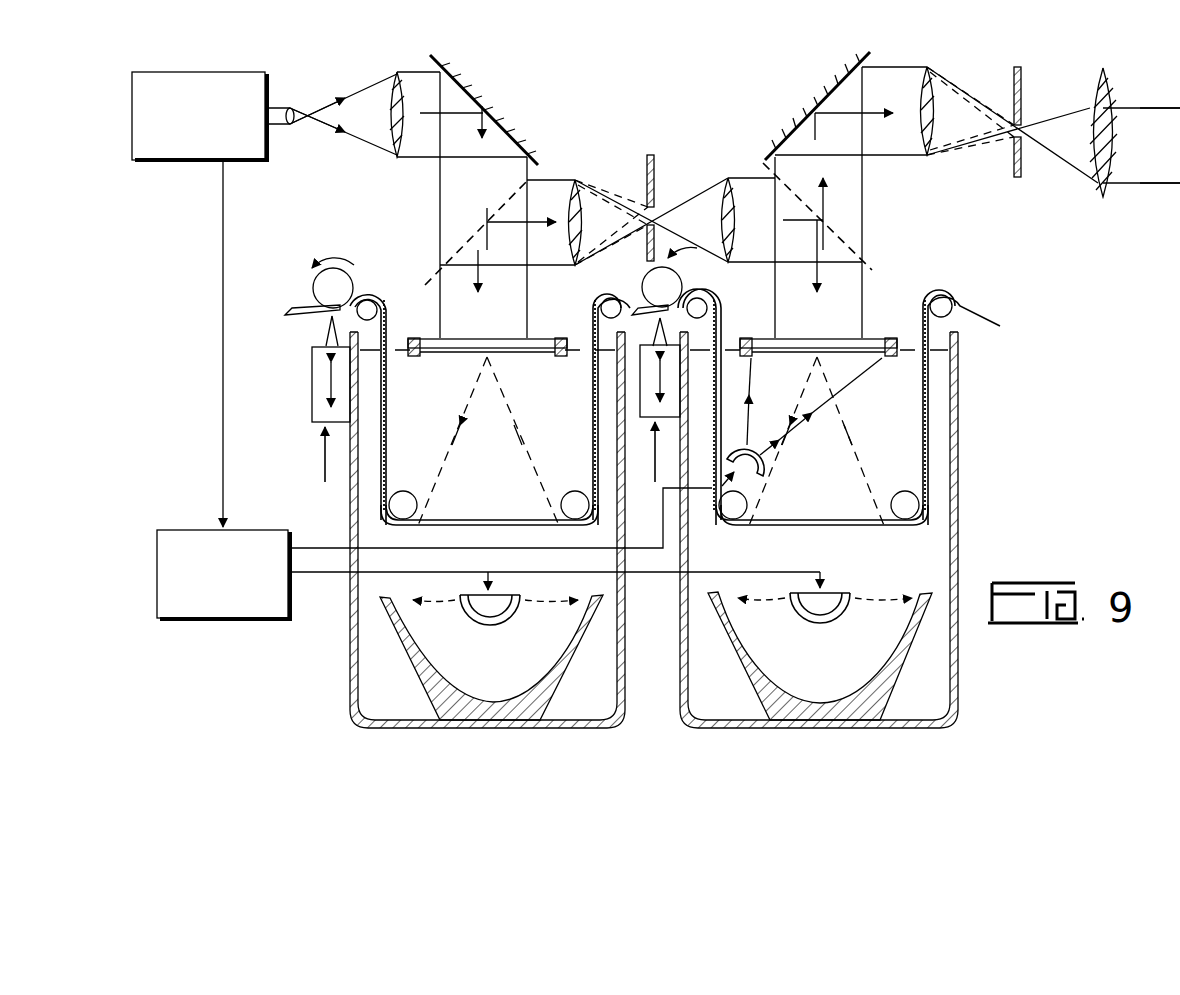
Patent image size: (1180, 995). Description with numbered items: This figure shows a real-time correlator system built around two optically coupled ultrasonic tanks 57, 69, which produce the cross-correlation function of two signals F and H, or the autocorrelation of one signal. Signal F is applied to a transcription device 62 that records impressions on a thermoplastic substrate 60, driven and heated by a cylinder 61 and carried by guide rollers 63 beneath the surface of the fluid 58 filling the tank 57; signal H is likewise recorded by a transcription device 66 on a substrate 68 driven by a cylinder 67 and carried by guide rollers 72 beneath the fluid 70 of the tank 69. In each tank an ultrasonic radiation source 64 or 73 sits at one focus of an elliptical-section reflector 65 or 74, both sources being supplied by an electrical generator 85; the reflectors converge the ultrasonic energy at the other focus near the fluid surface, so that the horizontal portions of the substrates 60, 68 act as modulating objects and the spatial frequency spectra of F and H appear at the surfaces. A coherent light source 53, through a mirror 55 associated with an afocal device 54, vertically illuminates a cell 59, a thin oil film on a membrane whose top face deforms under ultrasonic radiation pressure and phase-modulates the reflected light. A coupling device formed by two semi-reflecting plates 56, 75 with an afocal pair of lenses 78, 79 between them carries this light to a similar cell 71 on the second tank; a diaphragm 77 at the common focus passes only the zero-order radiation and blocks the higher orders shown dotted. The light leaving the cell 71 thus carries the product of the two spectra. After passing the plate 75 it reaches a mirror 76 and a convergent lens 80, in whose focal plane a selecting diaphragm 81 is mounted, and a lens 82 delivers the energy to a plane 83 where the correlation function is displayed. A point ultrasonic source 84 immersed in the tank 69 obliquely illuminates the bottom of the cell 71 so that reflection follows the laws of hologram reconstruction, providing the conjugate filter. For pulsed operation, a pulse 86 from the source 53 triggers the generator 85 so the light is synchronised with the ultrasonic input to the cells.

The coherent light source 53 is at (213, 80).
The afocal device 54 is at (385, 160).
The mirror 55 is at (470, 90).
The semi-reflecting plate 56 is at (498, 208).
The ultrasonic tank 57 is at (350, 520).
The processing liquid 58 is at (420, 420).
The cell 59 is at (530, 338).
The thermoplastic substrate 60 is at (398, 300).
The cylinder 61 is at (345, 285).
The transcription device 62 is at (312, 385).
The guide rollers 63 is at (428, 488).
The ultrasonic radiation source 64 is at (505, 612).
The elliptical-section reflector 65 is at (410, 630).
The transcription device 66 is at (600, 332).
The cylinder 67 is at (684, 290).
The thermoplastic substrate 68 is at (712, 318).
The ultrasonic tank 69 is at (958, 480).
The processing liquid 70 is at (880, 450).
The cell 71 is at (888, 338).
The guide rollers 72 is at (748, 503).
The ultrasonic radiation source 73 is at (845, 618).
The elliptical-section reflector 74 is at (765, 650).
The semi-reflecting plate 75 is at (862, 240).
The mirror 76 is at (825, 90).
The diaphragm 77 is at (655, 156).
The lens 78 is at (570, 182).
The lens 79 is at (720, 183).
The convergent lens 80 is at (930, 68).
The selecting diaphragm 81 is at (1022, 72).
The lens 82 is at (1110, 80).
The plane 83 is at (1160, 166).
The point ultrasonic energy source 84 is at (768, 448).
The electrical generator 85 is at (245, 620).
The pulse 86 is at (222, 310).